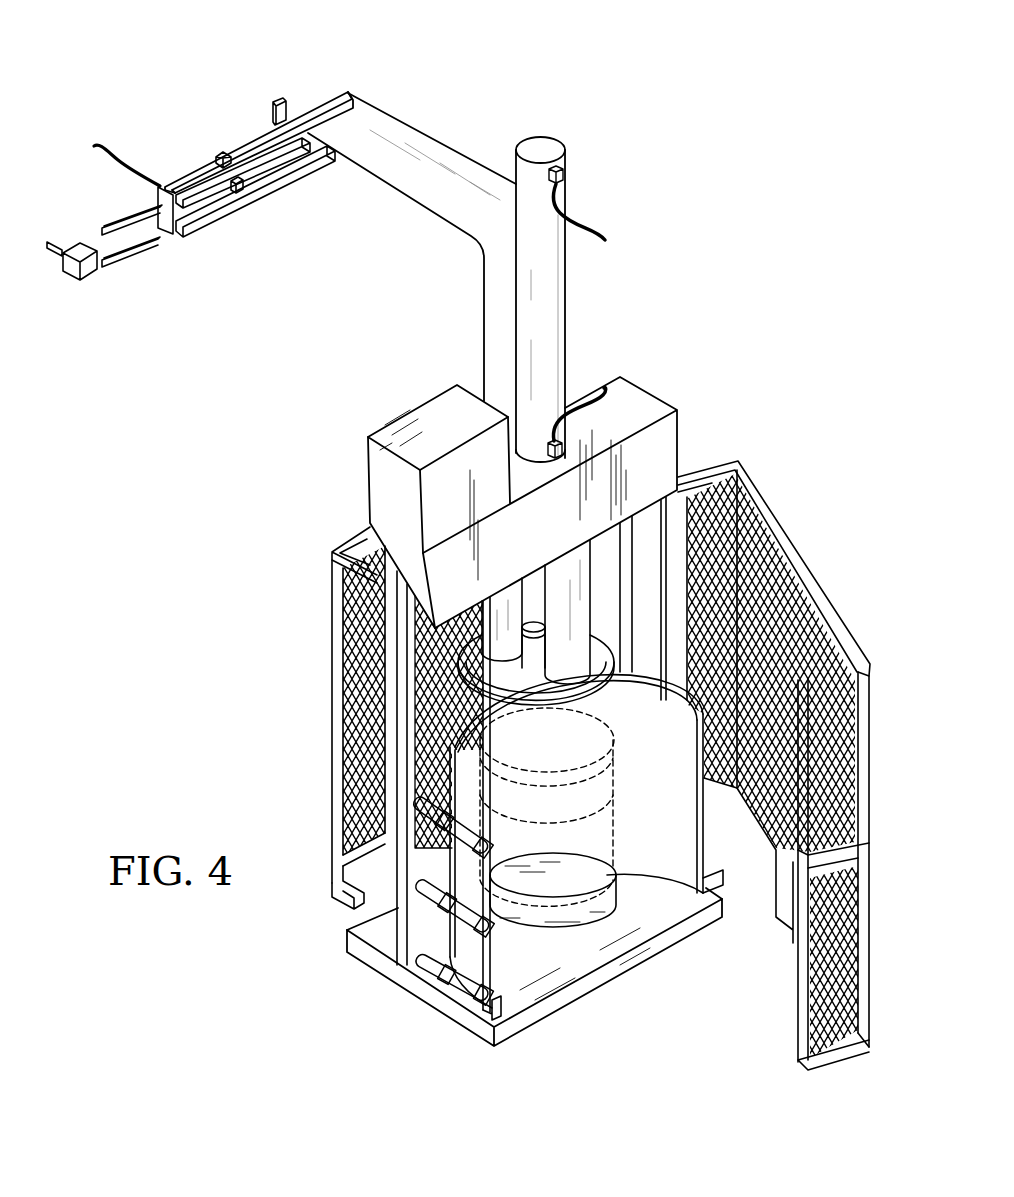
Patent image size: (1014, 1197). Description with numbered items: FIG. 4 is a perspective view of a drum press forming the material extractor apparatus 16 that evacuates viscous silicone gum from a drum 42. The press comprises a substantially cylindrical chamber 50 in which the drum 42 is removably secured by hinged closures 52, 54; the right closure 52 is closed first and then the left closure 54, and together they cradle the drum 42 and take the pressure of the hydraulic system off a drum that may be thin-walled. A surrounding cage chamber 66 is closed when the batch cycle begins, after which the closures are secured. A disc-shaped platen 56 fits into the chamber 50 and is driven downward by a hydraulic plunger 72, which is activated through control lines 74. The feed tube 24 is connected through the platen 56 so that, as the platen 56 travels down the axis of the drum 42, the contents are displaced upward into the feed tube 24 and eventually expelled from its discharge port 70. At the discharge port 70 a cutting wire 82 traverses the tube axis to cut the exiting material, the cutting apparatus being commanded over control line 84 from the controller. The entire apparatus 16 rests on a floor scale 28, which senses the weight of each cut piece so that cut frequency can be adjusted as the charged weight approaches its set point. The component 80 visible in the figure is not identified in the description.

The material extractor apparatus 16 is at (716, 373).
The feed tube 24 is at (423, 142).
The floor scale 28 is at (372, 963).
The drum 42 is at (606, 827).
The cylindrical chamber 50 is at (606, 620).
The right hinged closure 52 is at (703, 828).
The left hinged closure 54 is at (477, 957).
The disc-shaped platen 56 is at (468, 673).
The cage chamber 66 is at (344, 632).
The feed tube discharge port 70 is at (341, 90).
The hydraulic plunger 72 is at (555, 312).
The control lines 74 is at (604, 228).
The guide rails 80 is at (228, 222).
The cutting wire 82 is at (276, 101).
The control line 84 is at (53, 247).